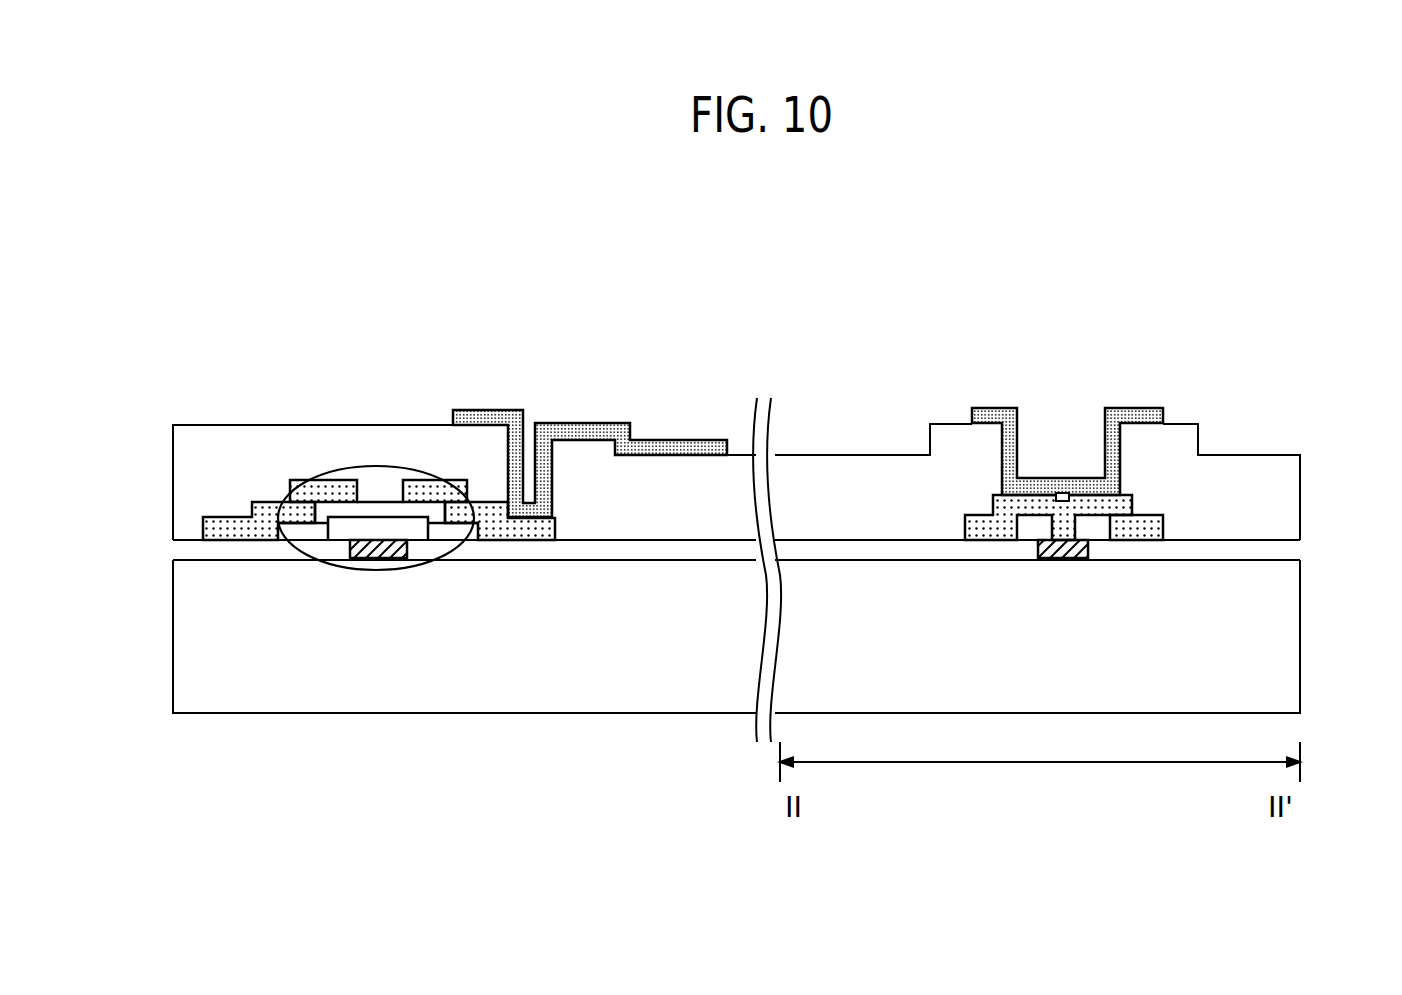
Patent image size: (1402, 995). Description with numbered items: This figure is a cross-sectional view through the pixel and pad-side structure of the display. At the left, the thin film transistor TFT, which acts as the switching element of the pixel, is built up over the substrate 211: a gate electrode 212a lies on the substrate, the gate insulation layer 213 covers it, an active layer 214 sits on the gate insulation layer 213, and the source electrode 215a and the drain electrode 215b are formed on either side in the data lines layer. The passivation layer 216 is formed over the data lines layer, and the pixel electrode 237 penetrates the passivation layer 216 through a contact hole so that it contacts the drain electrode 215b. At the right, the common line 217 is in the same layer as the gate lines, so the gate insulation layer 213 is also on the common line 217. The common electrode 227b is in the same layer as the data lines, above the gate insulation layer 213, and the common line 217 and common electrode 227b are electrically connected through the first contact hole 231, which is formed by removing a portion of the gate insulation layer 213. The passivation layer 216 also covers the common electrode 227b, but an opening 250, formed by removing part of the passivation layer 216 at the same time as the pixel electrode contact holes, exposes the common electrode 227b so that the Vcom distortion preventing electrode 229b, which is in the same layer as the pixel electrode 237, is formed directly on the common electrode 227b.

The substrate 211 is at (1287, 632).
The gate electrode 212a is at (377, 560).
The gate insulation layer 213 is at (188, 550).
The active layer 214 is at (333, 507).
The source electrode 215a is at (228, 520).
The drain electrode 215b is at (430, 493).
The passivation layer 216 is at (188, 472).
The common line 217 is at (1040, 546).
The common electrode 227b is at (1147, 518).
The Vcom distortion preventing electrode 229b is at (1137, 418).
The first contact hole 231 is at (1080, 517).
The pixel electrode 237 is at (667, 440).
The opening 250 is at (1061, 432).
The thin film transistor TFT is at (412, 562).